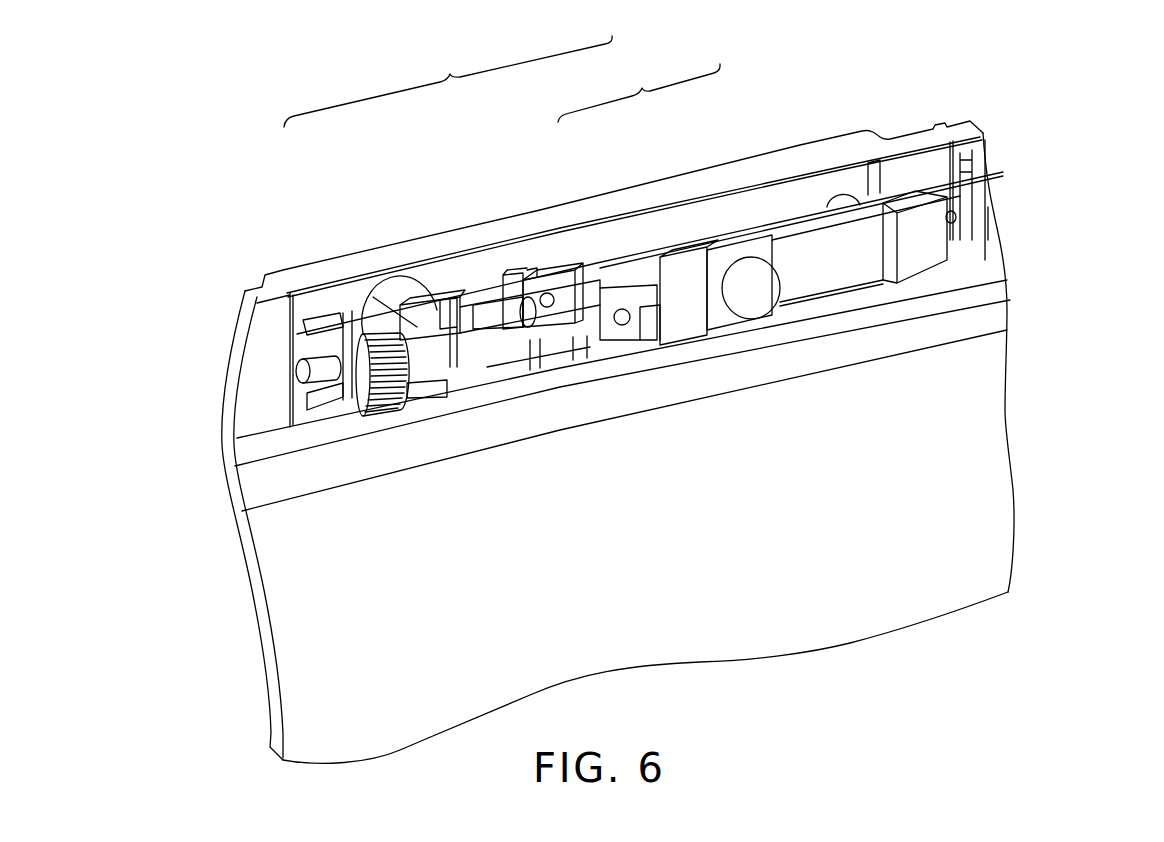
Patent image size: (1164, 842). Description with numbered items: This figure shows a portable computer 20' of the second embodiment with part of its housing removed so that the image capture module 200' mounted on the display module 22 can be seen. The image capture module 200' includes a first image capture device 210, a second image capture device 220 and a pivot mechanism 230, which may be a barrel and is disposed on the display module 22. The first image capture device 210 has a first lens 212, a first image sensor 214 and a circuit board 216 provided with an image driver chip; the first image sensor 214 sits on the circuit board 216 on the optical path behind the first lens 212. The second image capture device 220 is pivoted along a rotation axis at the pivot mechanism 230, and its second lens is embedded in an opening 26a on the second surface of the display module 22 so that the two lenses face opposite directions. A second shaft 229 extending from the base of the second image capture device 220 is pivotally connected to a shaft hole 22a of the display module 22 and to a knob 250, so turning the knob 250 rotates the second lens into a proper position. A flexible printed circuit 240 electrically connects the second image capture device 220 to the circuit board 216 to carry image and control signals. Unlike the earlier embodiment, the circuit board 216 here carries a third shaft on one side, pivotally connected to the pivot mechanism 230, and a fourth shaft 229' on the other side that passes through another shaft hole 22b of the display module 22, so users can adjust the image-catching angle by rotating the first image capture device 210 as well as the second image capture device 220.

The portable computer 20' is at (686, 448).
The display module 22 is at (800, 160).
The shaft hole 22a is at (313, 360).
The shaft hole 22b is at (957, 222).
The second shaft 229 is at (247, 415).
The fourth shaft 229' is at (1019, 250).
The opening 26a is at (430, 320).
The image capture module 200' is at (448, 81).
The first image capture device 210 is at (639, 90).
The first lens 212 is at (747, 280).
The first image sensor 214 is at (663, 270).
The circuit board 216 is at (787, 243).
The second image capture device 220 is at (430, 313).
The pivot mechanism 230 is at (488, 287).
The flexible printed circuit 240 is at (713, 253).
The knob 250 is at (342, 297).